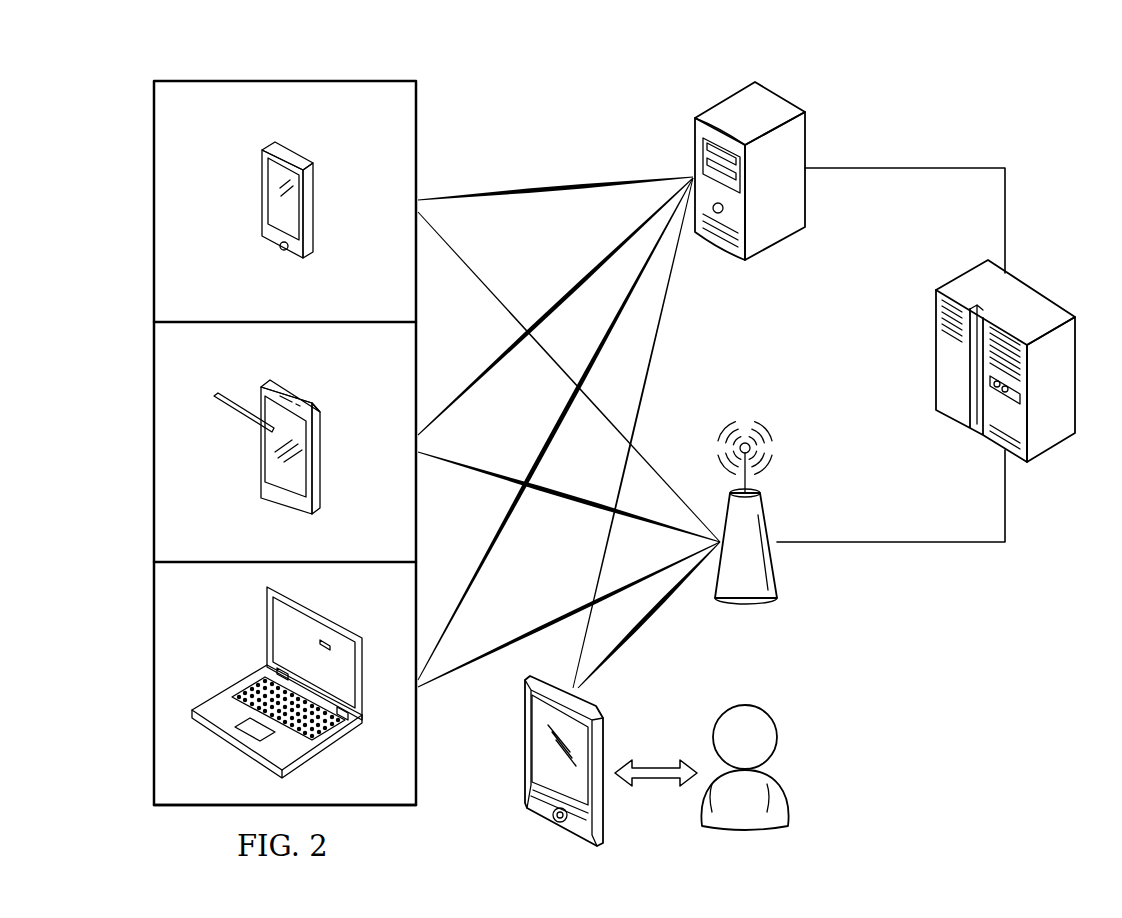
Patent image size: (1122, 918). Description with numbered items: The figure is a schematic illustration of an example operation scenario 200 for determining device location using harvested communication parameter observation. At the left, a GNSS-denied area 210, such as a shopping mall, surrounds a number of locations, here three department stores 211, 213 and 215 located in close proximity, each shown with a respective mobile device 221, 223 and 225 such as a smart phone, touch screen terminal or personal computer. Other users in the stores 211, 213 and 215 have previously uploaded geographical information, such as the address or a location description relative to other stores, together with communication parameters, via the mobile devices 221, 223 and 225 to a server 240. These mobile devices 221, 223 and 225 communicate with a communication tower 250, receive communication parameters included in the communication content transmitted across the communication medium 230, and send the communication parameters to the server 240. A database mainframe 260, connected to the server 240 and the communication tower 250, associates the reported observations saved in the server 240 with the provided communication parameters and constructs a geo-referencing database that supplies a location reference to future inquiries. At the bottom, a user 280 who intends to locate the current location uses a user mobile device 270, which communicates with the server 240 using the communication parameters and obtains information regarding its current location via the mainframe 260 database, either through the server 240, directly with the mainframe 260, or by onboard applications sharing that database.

The operation scenario 200 is at (920, 86).
The GNSS-denied area 210 is at (250, 78).
The store 211 is at (161, 200).
The store 213 is at (161, 440).
The store 215 is at (161, 700).
The mobile device 221 is at (262, 190).
The mobile device 223 is at (294, 386).
The mobile device 225 is at (230, 686).
The communication medium 230 is at (520, 144).
The server 240 is at (778, 95).
The communication tower 250 is at (752, 600).
The database mainframe 260 is at (1030, 286).
The user mobile device 270 is at (523, 740).
The user 280 is at (788, 793).